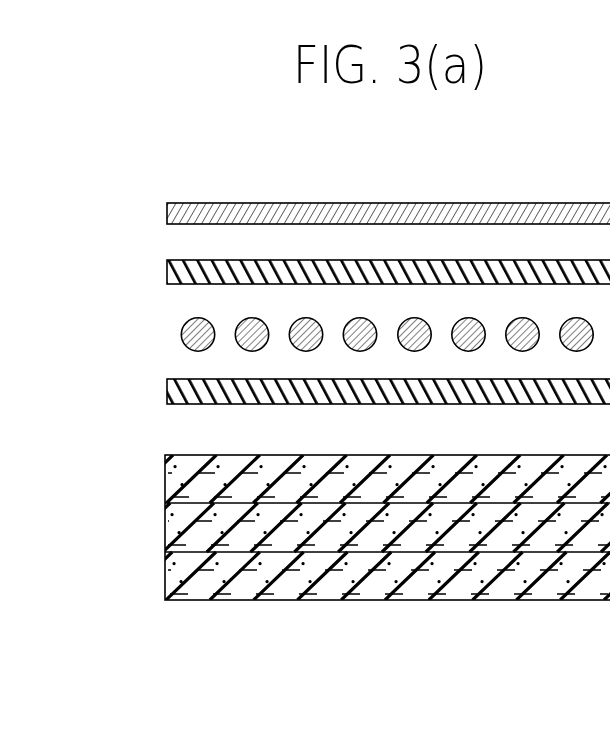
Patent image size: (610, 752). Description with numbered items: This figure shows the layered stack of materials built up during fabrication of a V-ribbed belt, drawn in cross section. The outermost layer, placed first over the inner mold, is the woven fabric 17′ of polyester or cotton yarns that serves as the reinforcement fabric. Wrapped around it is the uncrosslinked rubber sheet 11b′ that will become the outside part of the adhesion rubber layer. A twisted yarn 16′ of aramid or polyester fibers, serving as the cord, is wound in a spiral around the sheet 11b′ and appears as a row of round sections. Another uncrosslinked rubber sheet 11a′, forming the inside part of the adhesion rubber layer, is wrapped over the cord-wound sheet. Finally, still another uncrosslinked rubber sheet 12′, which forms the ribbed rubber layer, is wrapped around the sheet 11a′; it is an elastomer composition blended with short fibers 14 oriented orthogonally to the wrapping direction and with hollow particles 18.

The woven fabric 17′ is at (167, 217).
The uncrosslinked rubber sheet 11b′ is at (167, 275).
The twisted yarn 16′ is at (185, 333).
The uncrosslinked rubber sheet 11a′ is at (167, 395).
The uncrosslinked rubber sheet 12′ is at (342, 565).
The short fibers 14 is at (284, 592).
The hollow particles 18 is at (430, 579).